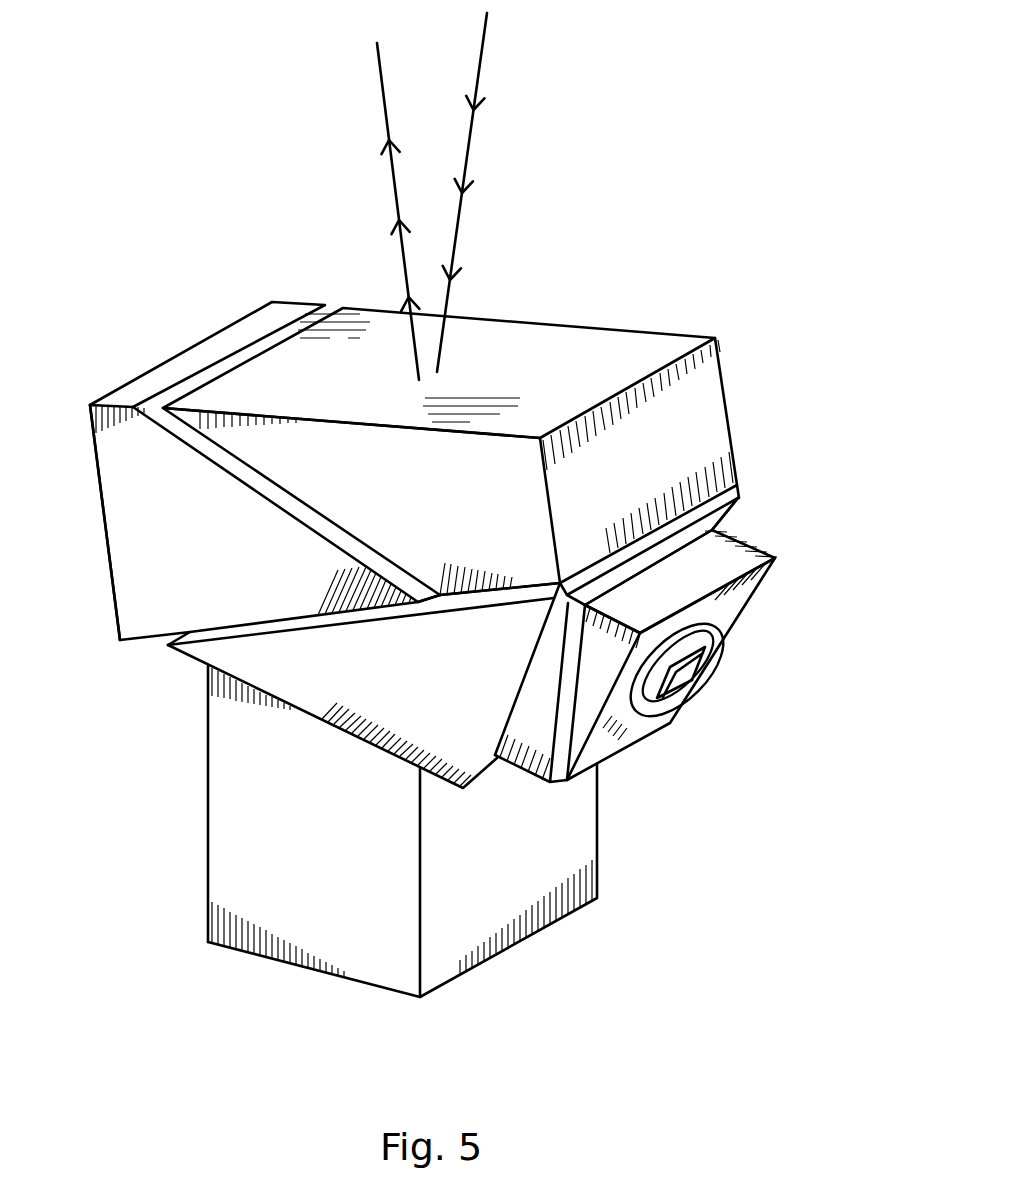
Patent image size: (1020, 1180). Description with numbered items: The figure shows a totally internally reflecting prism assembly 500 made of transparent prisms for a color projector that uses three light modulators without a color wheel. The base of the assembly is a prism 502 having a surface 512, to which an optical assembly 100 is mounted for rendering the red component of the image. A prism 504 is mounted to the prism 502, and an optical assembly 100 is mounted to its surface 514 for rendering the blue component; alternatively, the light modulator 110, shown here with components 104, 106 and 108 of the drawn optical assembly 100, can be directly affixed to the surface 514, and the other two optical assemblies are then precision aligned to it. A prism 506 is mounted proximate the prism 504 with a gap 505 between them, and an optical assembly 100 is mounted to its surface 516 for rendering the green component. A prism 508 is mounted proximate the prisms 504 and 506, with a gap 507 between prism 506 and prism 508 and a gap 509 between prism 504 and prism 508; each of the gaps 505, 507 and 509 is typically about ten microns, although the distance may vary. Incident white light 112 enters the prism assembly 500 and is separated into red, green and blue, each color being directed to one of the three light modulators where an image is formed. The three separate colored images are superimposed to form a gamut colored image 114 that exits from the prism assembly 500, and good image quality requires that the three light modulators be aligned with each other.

The optical assembly 100 is at (818, 658).
The mounting plate 104 is at (513, 767).
The laser diode housing 106 is at (607, 742).
The lens aperture 108 is at (710, 642).
The light modulator 110 is at (690, 678).
The incident white light 112 is at (480, 63).
The gamut colored image 114 is at (380, 100).
The TIR prism assembly 500 is at (152, 262).
The prism 502 is at (330, 851).
The prism 504 is at (418, 688).
The gap 505 is at (161, 640).
The prism 506 is at (213, 551).
The gap 507 is at (190, 435).
The prism 508 is at (477, 512).
The gap 509 is at (738, 490).
The surface 512 is at (370, 987).
The surface 514 is at (722, 517).
The surface 516 is at (112, 598).